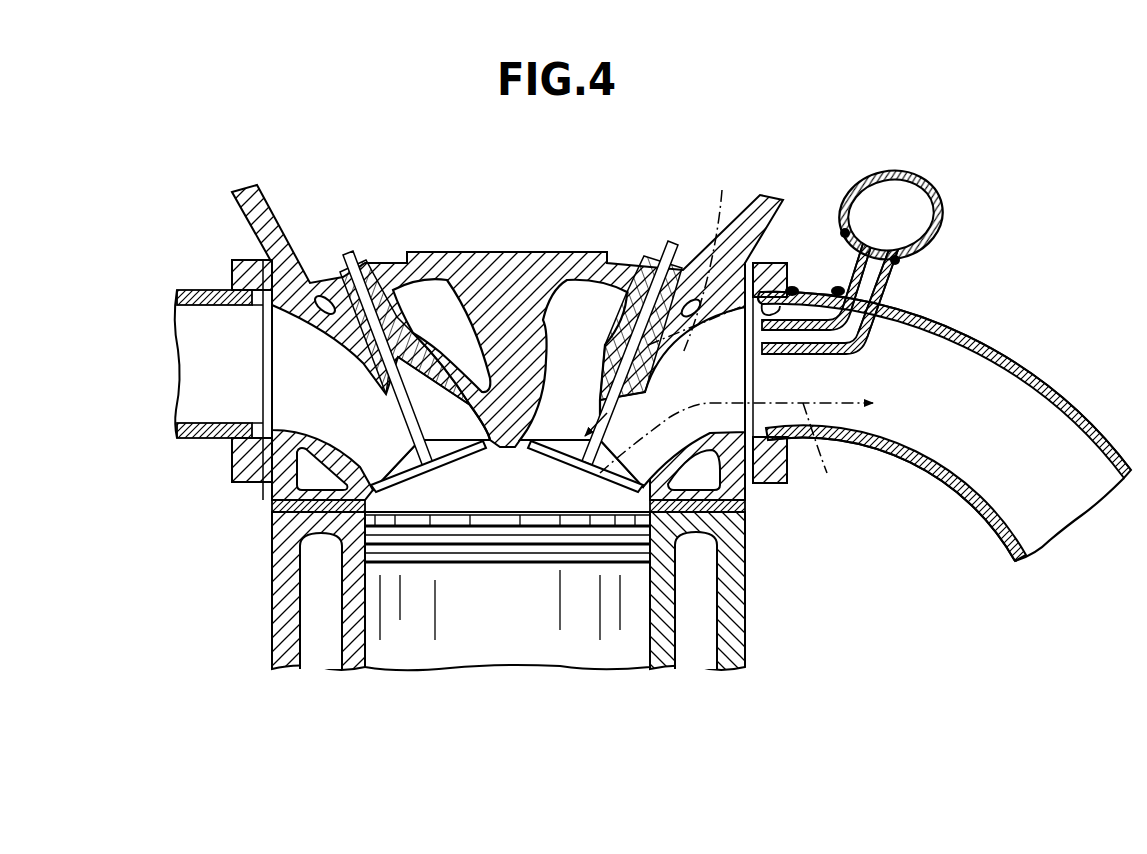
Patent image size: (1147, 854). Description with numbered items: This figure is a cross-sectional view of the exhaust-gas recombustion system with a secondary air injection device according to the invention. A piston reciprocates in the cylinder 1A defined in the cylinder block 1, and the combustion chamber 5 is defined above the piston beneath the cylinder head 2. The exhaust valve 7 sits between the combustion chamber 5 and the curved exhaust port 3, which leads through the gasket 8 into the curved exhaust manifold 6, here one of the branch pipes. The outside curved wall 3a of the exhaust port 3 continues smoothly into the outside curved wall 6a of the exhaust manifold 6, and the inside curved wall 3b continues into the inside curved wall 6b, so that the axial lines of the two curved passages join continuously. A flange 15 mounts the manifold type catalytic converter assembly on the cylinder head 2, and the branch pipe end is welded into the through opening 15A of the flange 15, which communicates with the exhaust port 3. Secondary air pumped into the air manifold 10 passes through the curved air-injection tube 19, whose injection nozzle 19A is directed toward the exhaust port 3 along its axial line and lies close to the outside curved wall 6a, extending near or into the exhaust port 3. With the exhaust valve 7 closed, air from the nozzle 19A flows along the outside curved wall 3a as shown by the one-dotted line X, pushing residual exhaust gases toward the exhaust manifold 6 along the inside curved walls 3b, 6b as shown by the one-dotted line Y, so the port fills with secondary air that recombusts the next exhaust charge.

The cylinder block 1 is at (267, 575).
The cylinder 1A is at (380, 583).
The cylinder head 2 is at (270, 493).
The exhaust port 3 is at (687, 533).
The outside curved wall of the exhaust port 3a is at (693, 296).
The inside curved wall of the exhaust port 3b is at (712, 455).
The combustion chamber 5 is at (478, 490).
The exhaust manifold 6 is at (967, 340).
The outside curved wall of the exhaust manifold 6a is at (1003, 400).
The inside curved wall of the exhaust manifold 6b is at (920, 447).
The exhaust valve 7 is at (545, 440).
The gasket 8 is at (747, 490).
The air manifold 10 is at (920, 190).
The flange 15 is at (800, 290).
The through opening 15A is at (803, 285).
The curved air-injection tube 19 is at (883, 277).
The injection nozzle 19A is at (813, 357).
The one-dotted line X is at (695, 253).
The one-dotted line Y is at (736, 454).